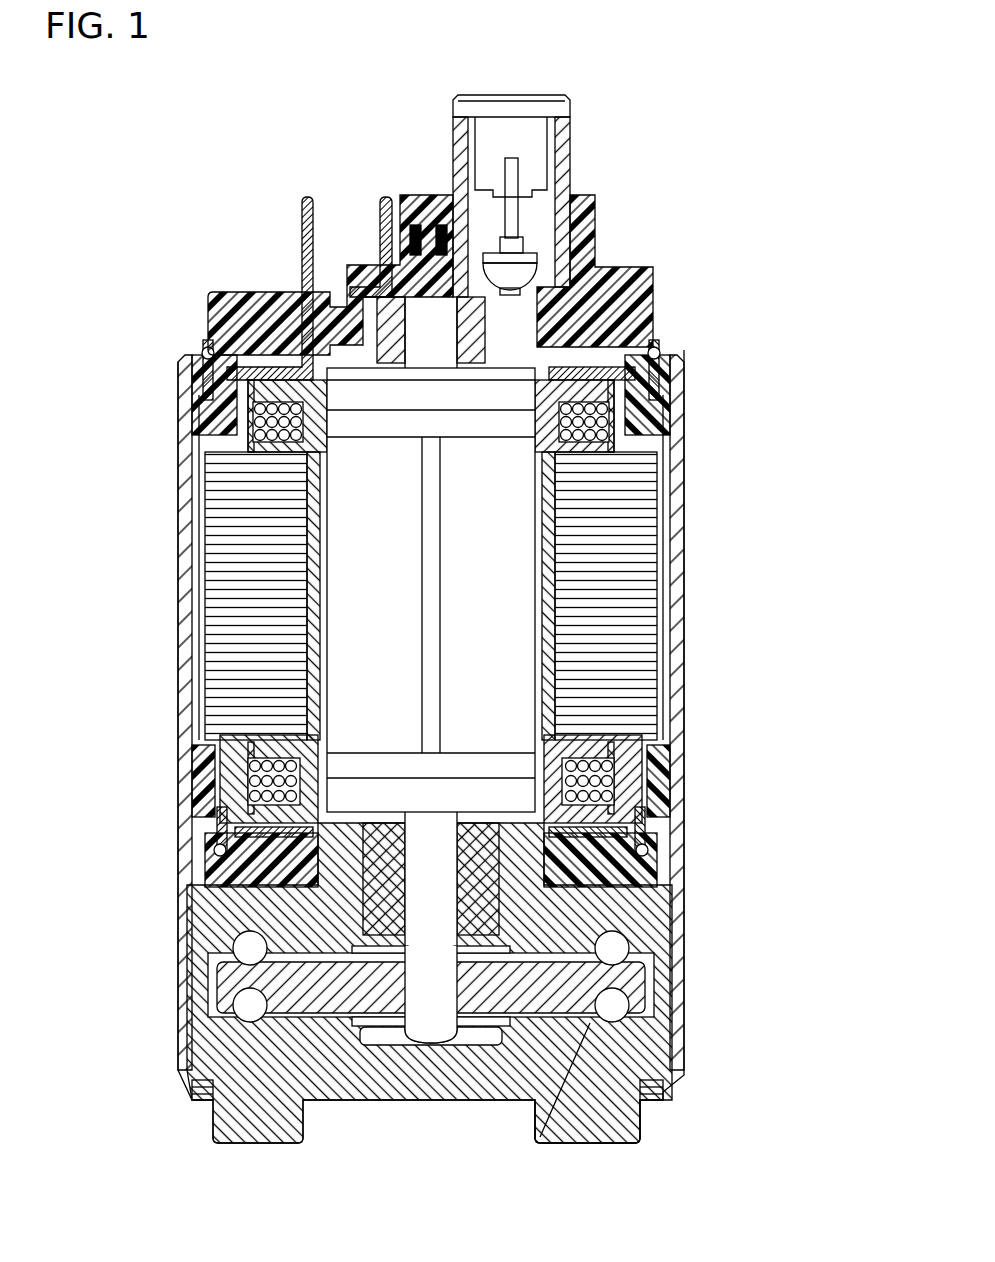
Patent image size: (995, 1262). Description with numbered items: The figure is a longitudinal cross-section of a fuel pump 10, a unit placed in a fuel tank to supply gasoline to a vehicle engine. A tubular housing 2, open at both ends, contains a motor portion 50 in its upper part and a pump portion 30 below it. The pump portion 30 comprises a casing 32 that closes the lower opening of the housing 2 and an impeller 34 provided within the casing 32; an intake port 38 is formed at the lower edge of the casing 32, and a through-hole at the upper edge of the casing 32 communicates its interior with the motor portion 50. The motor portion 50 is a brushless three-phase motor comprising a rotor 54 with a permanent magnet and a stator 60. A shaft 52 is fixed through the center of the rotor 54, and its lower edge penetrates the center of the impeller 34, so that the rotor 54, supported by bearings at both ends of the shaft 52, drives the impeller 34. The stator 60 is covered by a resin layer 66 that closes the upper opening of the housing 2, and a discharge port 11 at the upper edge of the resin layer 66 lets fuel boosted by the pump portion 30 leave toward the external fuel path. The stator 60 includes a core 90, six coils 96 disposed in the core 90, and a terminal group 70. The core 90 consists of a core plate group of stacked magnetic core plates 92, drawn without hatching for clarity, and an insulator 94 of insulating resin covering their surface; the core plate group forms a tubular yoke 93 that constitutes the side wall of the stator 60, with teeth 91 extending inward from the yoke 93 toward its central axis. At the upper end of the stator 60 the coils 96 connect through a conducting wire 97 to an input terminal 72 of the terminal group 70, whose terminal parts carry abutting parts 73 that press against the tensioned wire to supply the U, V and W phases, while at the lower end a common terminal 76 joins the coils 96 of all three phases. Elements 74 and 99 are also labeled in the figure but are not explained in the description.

The housing 2 is at (680, 527).
The fuel pump 10 is at (622, 82).
The discharge port 11 is at (542, 130).
The pump portion 30 is at (690, 939).
The casing 32 is at (652, 1052).
The impeller 34 is at (627, 985).
The intake port 38 is at (608, 1115).
The motor portion 50 is at (697, 338).
The shaft 52 is at (433, 328).
The rotor 54 is at (227, 442).
The stator 60 is at (661, 608).
The resin layer 66 is at (620, 275).
The terminal group 70 is at (300, 227).
The input terminal 72 is at (305, 200).
The abutting part 73 is at (660, 385).
The terminal 74 is at (386, 200).
The common terminal 76 is at (653, 858).
The core 90 is at (623, 665).
The teeth 91 is at (280, 678).
The core plate 92 is at (205, 515).
The yoke 93 is at (225, 668).
The insulator 94 is at (255, 420).
The coil 96 is at (617, 420).
The conducting wire 97 is at (225, 402).
The bearing race 99 is at (283, 450).